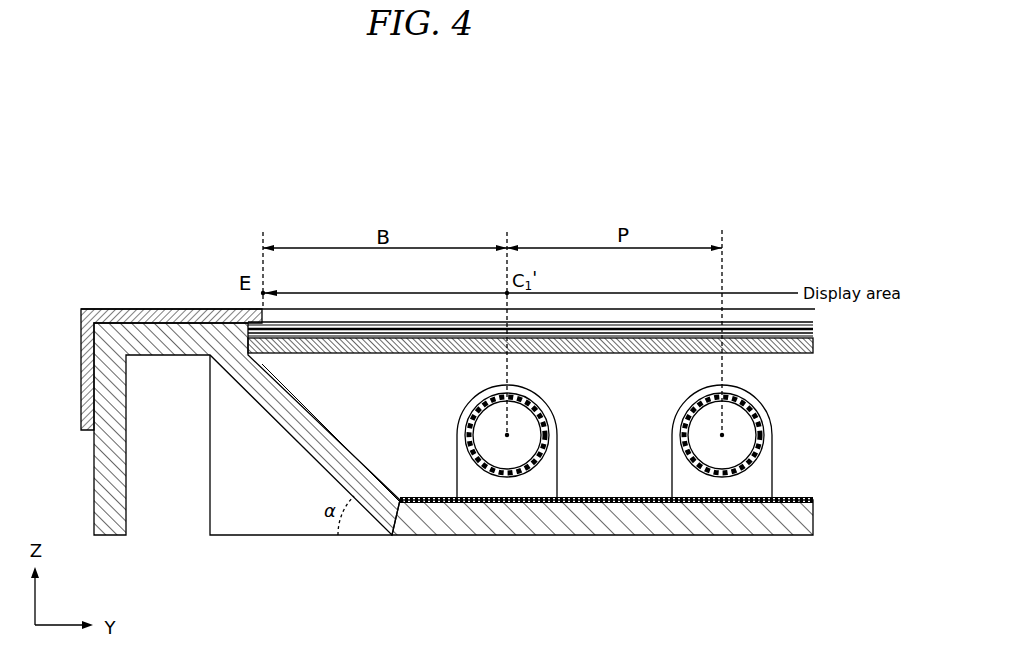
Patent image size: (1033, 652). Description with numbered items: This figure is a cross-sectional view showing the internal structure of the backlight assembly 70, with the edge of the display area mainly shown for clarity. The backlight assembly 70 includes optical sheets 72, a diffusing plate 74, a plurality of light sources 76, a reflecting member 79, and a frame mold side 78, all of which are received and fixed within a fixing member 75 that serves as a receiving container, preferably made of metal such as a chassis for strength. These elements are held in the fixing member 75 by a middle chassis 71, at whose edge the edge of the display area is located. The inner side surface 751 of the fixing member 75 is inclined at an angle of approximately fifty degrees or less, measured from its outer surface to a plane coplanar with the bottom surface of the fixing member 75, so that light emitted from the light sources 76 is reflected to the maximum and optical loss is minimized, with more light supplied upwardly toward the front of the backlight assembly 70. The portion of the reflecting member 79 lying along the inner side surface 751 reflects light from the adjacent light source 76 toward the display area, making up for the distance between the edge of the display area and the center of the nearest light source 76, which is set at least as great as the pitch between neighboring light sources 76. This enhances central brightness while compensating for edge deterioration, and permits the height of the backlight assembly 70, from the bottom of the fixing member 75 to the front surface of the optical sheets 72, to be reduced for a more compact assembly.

The backlight assembly 70 is at (519, 203).
The middle chassis 71 is at (81, 357).
The optical sheets 72 is at (820, 321).
The diffusing plate 74 is at (803, 343).
The fixing member 75 is at (95, 485).
The inner side surface 751 is at (313, 446).
The light sources 76 is at (762, 450).
The frame mold side 78 is at (790, 409).
The reflecting member 79 is at (813, 500).